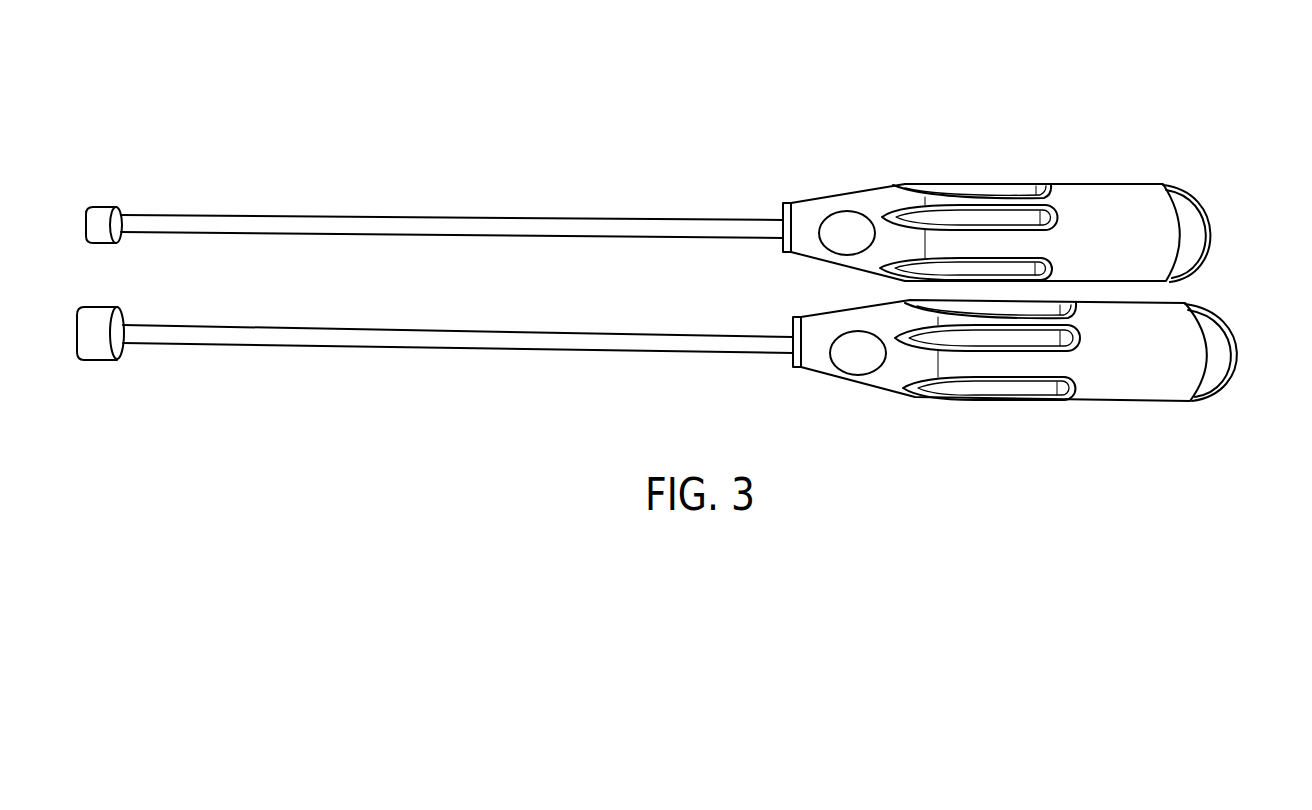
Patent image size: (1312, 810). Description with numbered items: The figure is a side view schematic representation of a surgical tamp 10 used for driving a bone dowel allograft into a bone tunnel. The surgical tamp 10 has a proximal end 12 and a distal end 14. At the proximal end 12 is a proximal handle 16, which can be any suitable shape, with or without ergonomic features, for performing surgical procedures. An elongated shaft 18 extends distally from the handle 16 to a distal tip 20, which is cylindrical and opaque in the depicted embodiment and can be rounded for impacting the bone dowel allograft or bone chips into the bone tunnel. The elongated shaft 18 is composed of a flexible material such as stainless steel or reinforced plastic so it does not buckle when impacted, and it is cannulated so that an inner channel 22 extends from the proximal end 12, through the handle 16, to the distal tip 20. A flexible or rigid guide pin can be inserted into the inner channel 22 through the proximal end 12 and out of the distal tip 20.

The surgical tamp 10 is at (462, 96).
The proximal end 12 is at (1163, 120).
The distal end 14 is at (160, 165).
The proximal handle 16 is at (975, 185).
The elongated shaft 18 is at (553, 220).
The distal tip 20 is at (104, 208).
The inner channel 22 is at (1240, 236).